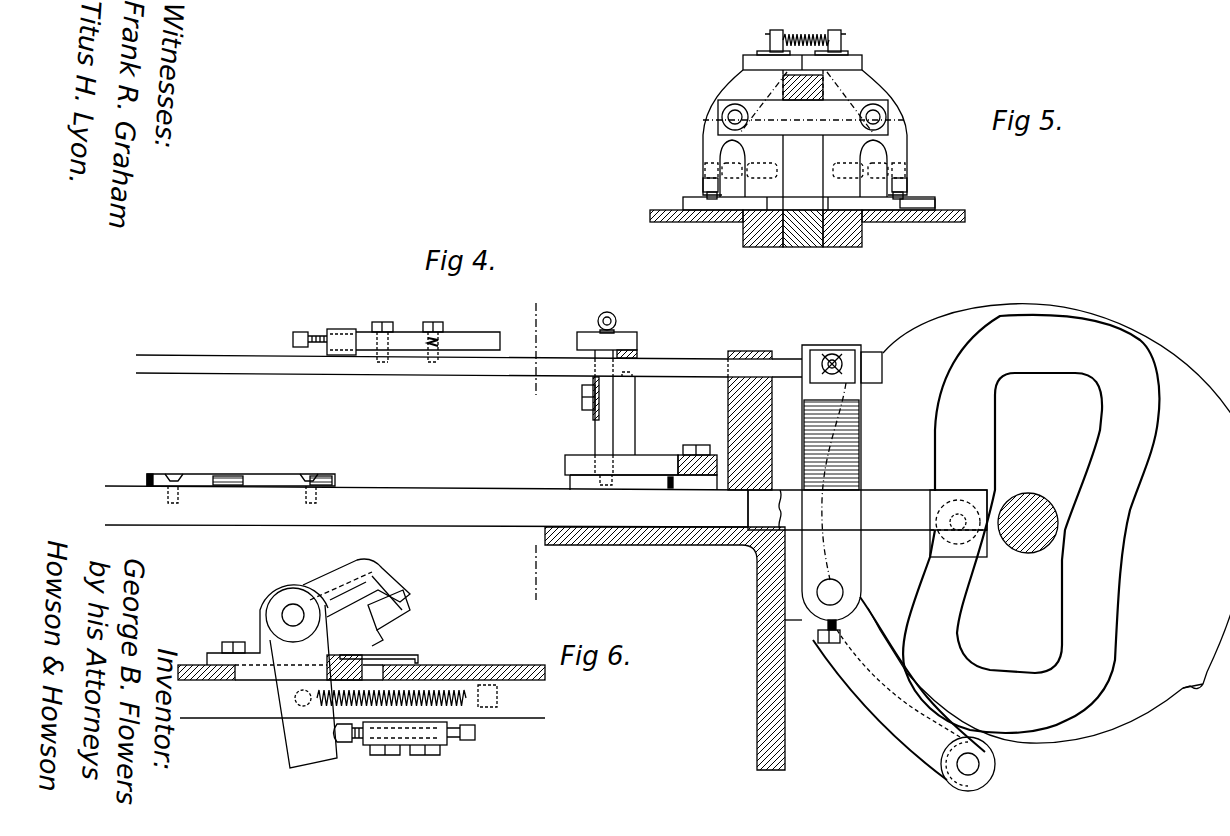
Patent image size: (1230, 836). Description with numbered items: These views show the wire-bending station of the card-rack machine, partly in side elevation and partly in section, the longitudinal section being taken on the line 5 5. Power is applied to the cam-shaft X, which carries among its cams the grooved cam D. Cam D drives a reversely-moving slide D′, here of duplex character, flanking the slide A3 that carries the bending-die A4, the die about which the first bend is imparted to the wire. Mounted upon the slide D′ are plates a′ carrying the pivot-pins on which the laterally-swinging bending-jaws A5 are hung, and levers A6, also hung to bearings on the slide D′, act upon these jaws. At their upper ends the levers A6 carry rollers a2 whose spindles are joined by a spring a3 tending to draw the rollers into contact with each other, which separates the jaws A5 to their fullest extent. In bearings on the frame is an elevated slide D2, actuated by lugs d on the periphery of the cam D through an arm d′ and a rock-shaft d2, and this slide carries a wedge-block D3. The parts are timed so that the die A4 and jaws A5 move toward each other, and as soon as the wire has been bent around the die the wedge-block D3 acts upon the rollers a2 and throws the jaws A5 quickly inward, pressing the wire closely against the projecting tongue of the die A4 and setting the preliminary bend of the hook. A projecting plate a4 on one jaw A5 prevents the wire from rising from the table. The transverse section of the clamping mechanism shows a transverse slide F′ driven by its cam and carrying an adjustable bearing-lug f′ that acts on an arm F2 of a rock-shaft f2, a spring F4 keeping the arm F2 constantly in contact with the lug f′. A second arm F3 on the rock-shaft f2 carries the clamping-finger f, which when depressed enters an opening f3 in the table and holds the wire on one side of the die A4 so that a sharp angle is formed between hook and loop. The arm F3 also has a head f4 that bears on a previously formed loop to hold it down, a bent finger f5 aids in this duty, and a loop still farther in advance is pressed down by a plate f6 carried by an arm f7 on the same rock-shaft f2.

In FIG. 5, the spring a3 is at (805, 31).
In FIG. 4, the spring a3 is at (617, 318).
In FIG. 5, the rollers a2 is at (743, 62).
In FIG. 4, the rollers a2 is at (637, 342).
In FIG. 5, the elevated slide D2 is at (823, 90).
In FIG. 4, the elevated slide D2 is at (509, 375).
In FIG. 4, the wedge-block D3 is at (396, 335).
In FIG. 5, the levers A6 is at (703, 143).
In FIG. 4, the levers A6 is at (597, 437).
In FIG. 5, the laterally-swinging bending-jaws A5 is at (683, 200).
In FIG. 4, the laterally-swinging bending-jaws A5 is at (565, 476).
In FIG. 4, the bending-die A4 is at (283, 476).
In FIG. 5, the slide A3 is at (803, 241).
In FIG. 4, the slide A3 is at (426, 506).
In FIG. 5, the plates a′ is at (805, 186).
In FIG. 5, the projecting plate a4 is at (930, 203).
In FIG. 5, the reversely-moving slide D′ is at (802, 241).
In FIG. 4, the reversely-moving slide D′ is at (867, 523).
In FIG. 4, the arm d′ is at (898, 568).
In FIG. 4, the rock-shaft d2 is at (833, 592).
In FIG. 4, the grooved cam D is at (1049, 523).
In FIG. 4, the cam-shaft X is at (1027, 493).
In FIG. 4, the lugs d is at (1193, 675).
In FIG. 4, the section line 5 is at (535, 450).
In FIG. 6, the transverse slide F′ is at (361, 691).
In FIG. 6, the arm F2 is at (303, 686).
In FIG. 6, the arm F3 is at (345, 566).
In FIG. 6, the spring F4 is at (435, 695).
In FIG. 6, the clamping-finger f is at (385, 640).
In FIG. 6, the adjustable bearing-lug f′ is at (345, 745).
In FIG. 6, the rock-shaft f2 is at (293, 604).
In FIG. 6, the opening f3 is at (372, 665).
In FIG. 6, the head f4 is at (407, 598).
In FIG. 6, the bent finger f5 is at (418, 655).
In FIG. 6, the plate f6 is at (388, 578).
In FIG. 6, the arm f7 is at (348, 595).